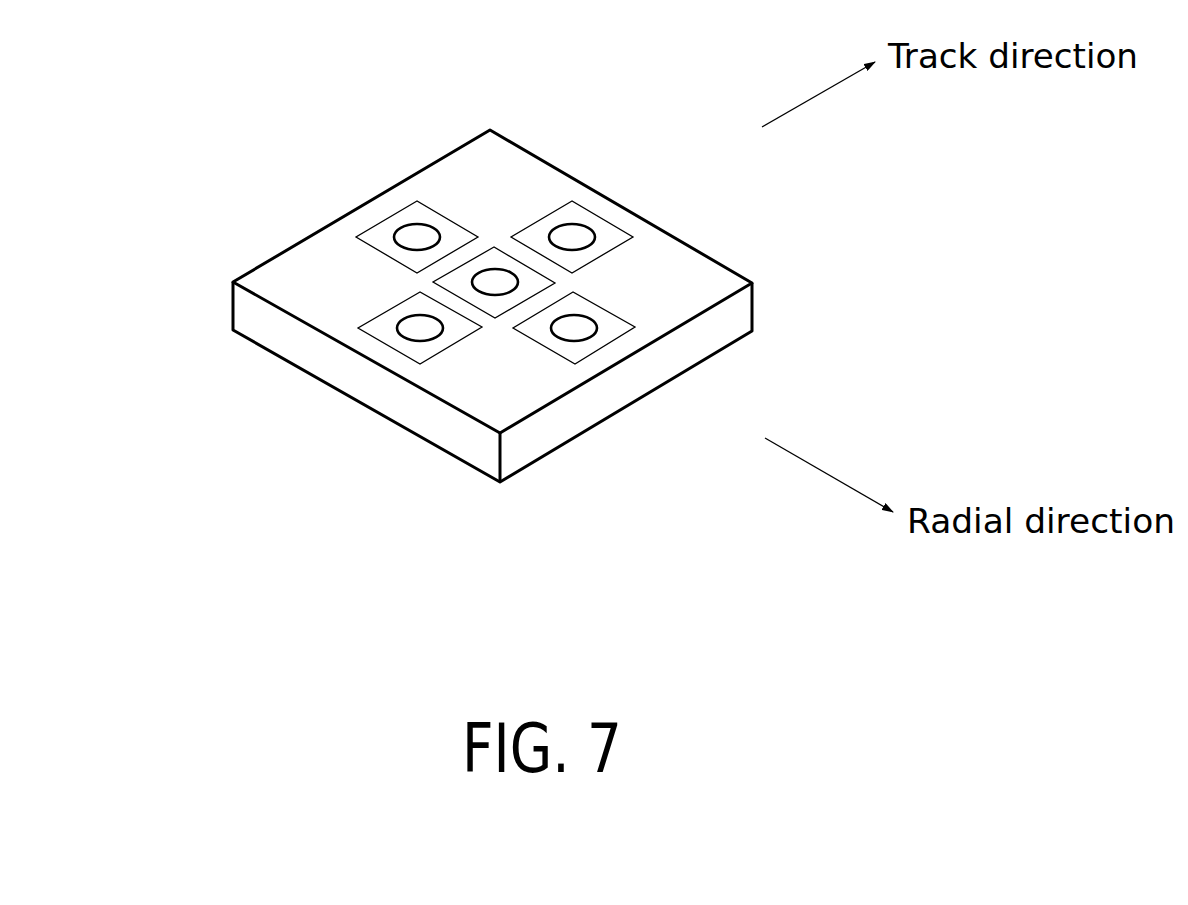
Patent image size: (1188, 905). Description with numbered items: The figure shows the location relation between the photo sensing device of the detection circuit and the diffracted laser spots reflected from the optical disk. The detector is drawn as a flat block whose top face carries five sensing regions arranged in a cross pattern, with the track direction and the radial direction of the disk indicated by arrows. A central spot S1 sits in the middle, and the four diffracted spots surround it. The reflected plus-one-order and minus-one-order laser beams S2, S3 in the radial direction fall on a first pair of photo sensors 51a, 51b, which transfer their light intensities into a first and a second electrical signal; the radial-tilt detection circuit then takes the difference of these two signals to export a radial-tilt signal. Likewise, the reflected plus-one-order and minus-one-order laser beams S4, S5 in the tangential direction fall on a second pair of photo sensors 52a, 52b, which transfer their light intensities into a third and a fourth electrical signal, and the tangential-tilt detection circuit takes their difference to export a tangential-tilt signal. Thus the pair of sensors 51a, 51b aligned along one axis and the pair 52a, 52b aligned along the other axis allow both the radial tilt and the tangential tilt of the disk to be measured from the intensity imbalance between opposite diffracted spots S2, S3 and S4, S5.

The 0-order laser beam spot S1 is at (489, 297).
The +1-order laser beam in the radial direction S2 is at (395, 233).
The −1-order laser beam in the radial direction S3 is at (594, 339).
The +1-order laser beam in the tangential direction S4 is at (395, 336).
The −1-order laser beam in the tangential direction S5 is at (592, 249).
The photo sensor 51a is at (457, 237).
The photo sensor 51b is at (530, 343).
The photo sensor 52a is at (414, 296).
The photo sensor 52b is at (533, 233).